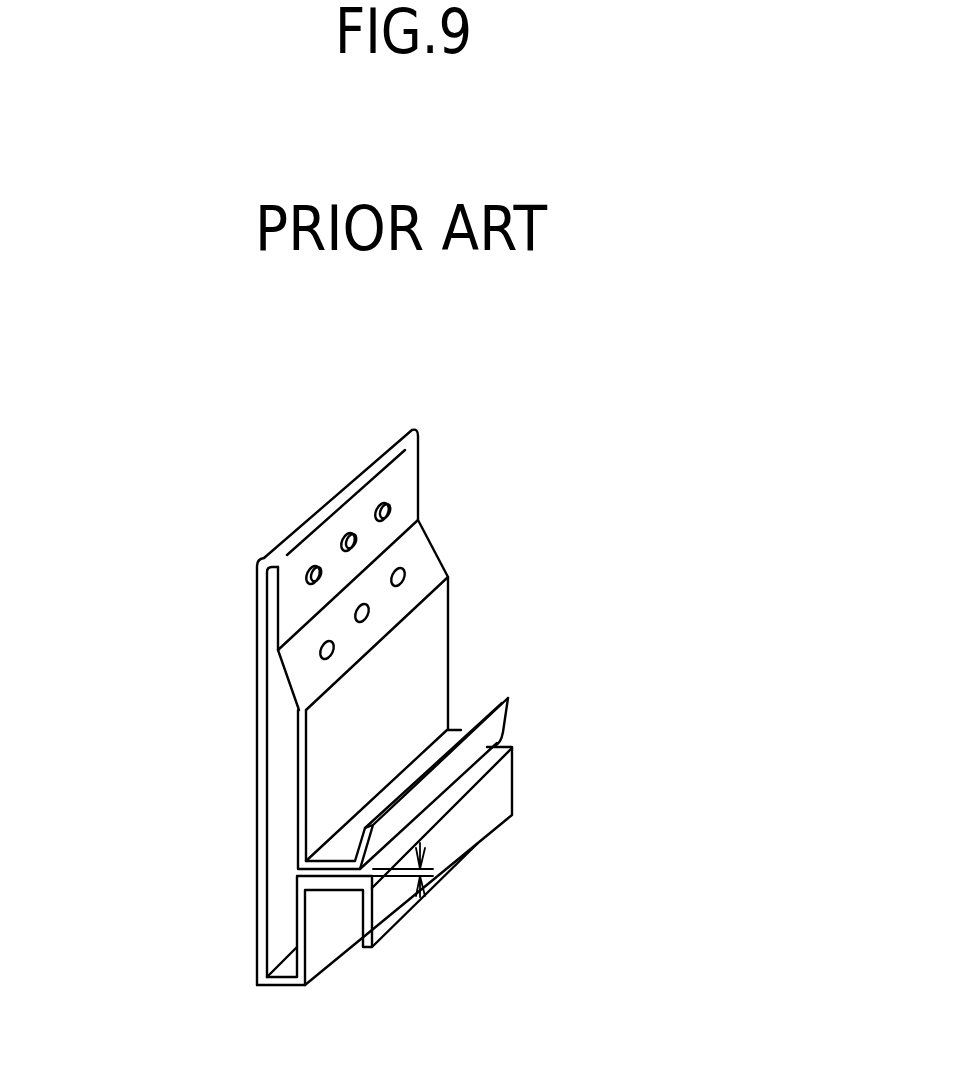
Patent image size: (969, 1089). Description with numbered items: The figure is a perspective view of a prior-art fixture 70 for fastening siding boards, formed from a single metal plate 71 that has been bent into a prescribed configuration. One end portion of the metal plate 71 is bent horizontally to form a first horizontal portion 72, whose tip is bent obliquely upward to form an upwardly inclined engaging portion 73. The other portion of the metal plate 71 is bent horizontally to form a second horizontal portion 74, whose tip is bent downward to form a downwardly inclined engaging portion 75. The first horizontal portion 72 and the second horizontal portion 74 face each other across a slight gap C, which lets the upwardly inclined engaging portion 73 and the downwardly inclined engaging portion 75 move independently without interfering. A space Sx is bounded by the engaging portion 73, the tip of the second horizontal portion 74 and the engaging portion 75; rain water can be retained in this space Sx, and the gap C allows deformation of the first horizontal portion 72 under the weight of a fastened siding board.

The fixture 70 is at (658, 435).
The metal plate 71 is at (231, 785).
The first horizontal portion 72 is at (388, 790).
The upwardly inclined engaging portion 73 is at (503, 723).
The second horizontal portion 74 is at (330, 890).
The downwardly inclined engaging portion 75 is at (467, 825).
The space Sx is at (452, 773).
The gap C is at (425, 877).